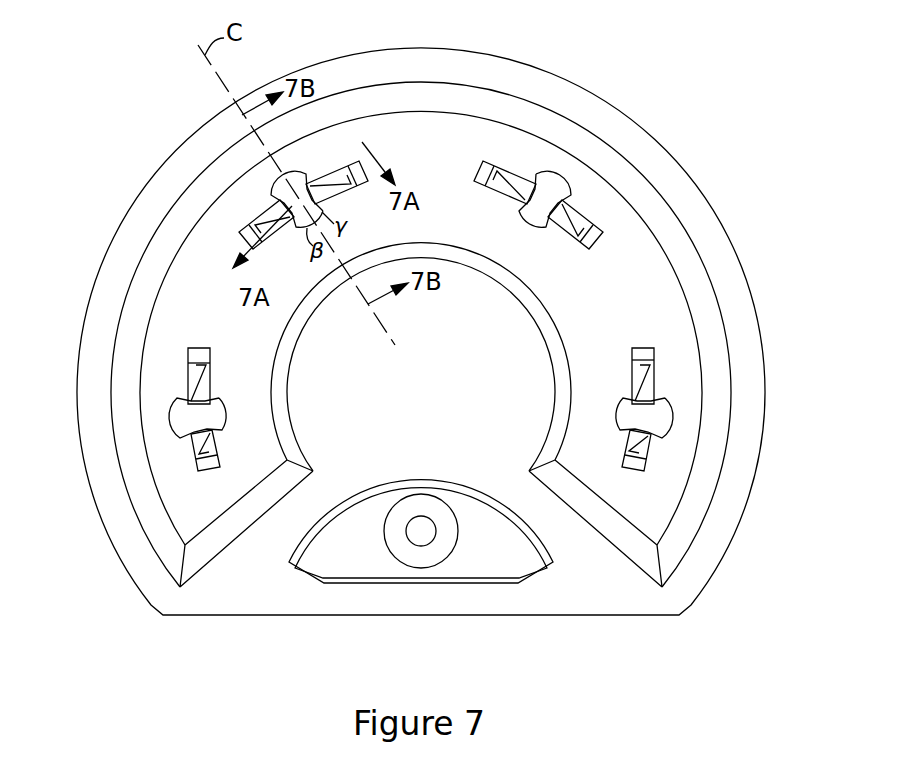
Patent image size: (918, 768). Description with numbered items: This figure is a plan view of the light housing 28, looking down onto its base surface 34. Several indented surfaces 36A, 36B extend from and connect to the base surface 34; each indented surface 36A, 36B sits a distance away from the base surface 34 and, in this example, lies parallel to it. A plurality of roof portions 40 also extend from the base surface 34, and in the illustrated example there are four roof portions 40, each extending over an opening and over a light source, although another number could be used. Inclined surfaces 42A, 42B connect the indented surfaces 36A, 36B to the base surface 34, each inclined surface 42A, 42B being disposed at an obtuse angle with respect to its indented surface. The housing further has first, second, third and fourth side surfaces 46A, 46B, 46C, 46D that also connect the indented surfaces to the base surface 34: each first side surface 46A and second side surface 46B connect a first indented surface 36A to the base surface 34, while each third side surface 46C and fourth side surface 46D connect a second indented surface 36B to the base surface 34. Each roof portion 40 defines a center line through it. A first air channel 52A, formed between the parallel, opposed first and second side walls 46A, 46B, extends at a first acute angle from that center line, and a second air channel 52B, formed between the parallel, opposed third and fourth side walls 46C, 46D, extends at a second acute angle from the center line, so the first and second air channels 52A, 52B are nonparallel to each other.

The light housing 28 is at (748, 194).
The base surface 34 is at (173, 494).
The first indented surface 36A is at (507, 178).
The second indented surface 36B is at (342, 180).
The roof portion 40 is at (288, 192).
The first inclined surface 42A is at (240, 232).
The second inclined surface 42B is at (366, 160).
The first side surface 46A is at (505, 187).
The second side surface 46B is at (525, 183).
The third side surface 46C is at (575, 216).
The fourth side surface 46D is at (557, 228).
The first air channel 52A is at (265, 215).
The second air channel 52B is at (323, 172).